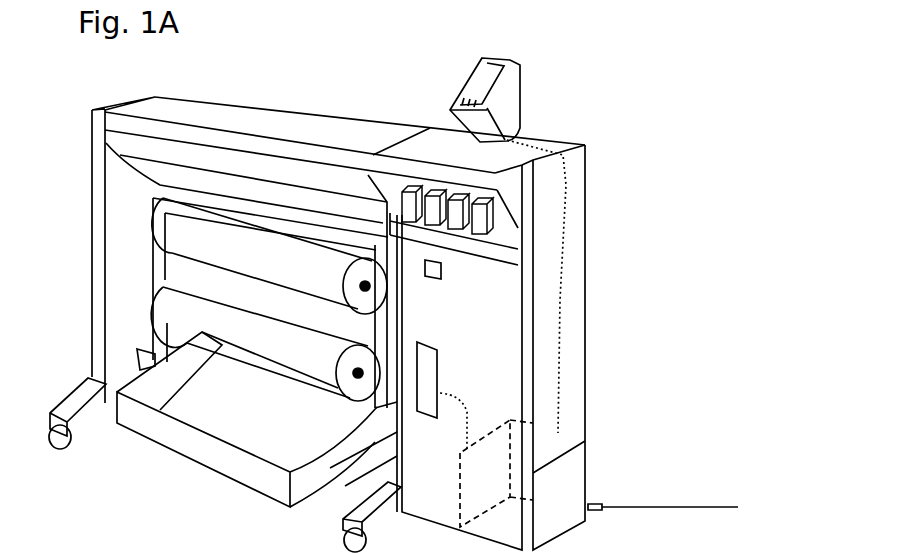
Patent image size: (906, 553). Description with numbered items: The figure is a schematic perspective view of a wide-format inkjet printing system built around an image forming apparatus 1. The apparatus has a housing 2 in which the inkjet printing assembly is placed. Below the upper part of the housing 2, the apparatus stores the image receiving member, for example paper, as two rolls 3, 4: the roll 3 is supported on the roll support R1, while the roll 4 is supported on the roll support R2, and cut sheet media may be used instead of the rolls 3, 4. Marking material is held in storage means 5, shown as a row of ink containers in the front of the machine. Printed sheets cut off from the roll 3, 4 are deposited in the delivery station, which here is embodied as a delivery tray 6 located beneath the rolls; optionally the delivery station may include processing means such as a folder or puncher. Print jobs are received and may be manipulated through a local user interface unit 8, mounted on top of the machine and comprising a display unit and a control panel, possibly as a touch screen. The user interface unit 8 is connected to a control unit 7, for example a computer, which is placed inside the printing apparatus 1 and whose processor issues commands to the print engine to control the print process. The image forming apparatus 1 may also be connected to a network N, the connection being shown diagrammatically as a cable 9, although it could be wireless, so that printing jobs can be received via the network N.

The image forming apparatus 1 is at (333, 97).
The housing 2 is at (173, 158).
The roll 3 is at (237, 233).
The roll 4 is at (237, 306).
The storage means for marking material 5 is at (480, 222).
The delivery tray 6 is at (215, 467).
The control unit 7 is at (580, 463).
The user interface unit 8 is at (512, 82).
The cable 9 is at (695, 503).
The roll support R1 is at (152, 245).
The roll support R2 is at (153, 315).
The network N is at (732, 504).